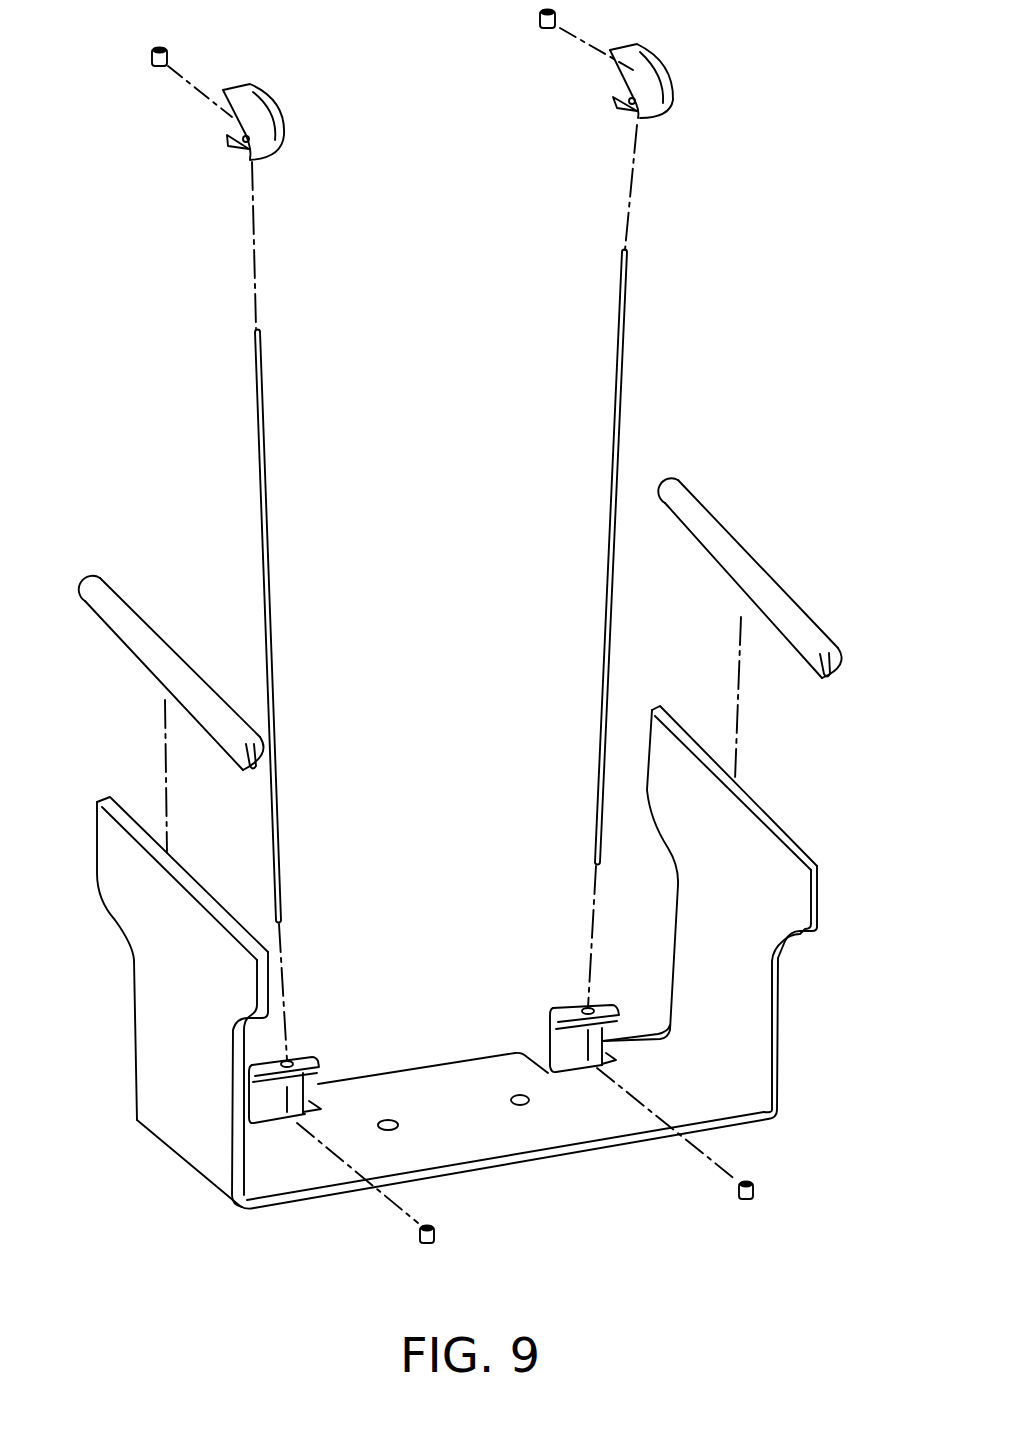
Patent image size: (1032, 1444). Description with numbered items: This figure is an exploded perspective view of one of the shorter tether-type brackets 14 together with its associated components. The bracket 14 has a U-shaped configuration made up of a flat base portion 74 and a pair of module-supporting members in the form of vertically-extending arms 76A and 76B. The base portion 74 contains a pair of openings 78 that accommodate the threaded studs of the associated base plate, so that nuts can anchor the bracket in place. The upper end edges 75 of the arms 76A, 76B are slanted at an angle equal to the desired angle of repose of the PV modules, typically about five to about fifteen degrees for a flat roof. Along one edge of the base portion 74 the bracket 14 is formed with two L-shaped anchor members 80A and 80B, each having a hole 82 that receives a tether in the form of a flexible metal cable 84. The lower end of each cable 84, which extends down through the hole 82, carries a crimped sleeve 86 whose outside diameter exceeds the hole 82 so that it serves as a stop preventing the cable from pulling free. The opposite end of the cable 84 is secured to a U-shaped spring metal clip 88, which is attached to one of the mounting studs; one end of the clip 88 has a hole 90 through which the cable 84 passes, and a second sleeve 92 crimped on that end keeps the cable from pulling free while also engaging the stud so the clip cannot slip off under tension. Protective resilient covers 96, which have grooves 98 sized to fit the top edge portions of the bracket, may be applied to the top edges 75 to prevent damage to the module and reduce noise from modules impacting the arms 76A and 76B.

The bracket 14 is at (469, 986).
The base portion 74 is at (273, 1173).
The upper end edges 75 is at (110, 797).
The arm 76A is at (787, 945).
The arm 76B is at (140, 910).
The openings 78 is at (398, 1125).
The anchor member 80A is at (586, 1010).
The anchor member 80B is at (284, 1062).
The hole 82 is at (310, 1062).
The flexible metal cable 84 is at (260, 473).
The sleeve 86 is at (434, 1236).
The spring metal clip 88 is at (262, 110).
The hole 90 is at (617, 102).
The sleeve 92 is at (150, 58).
The protective resilient covers 96 is at (133, 613).
The grooves 98 is at (822, 682).